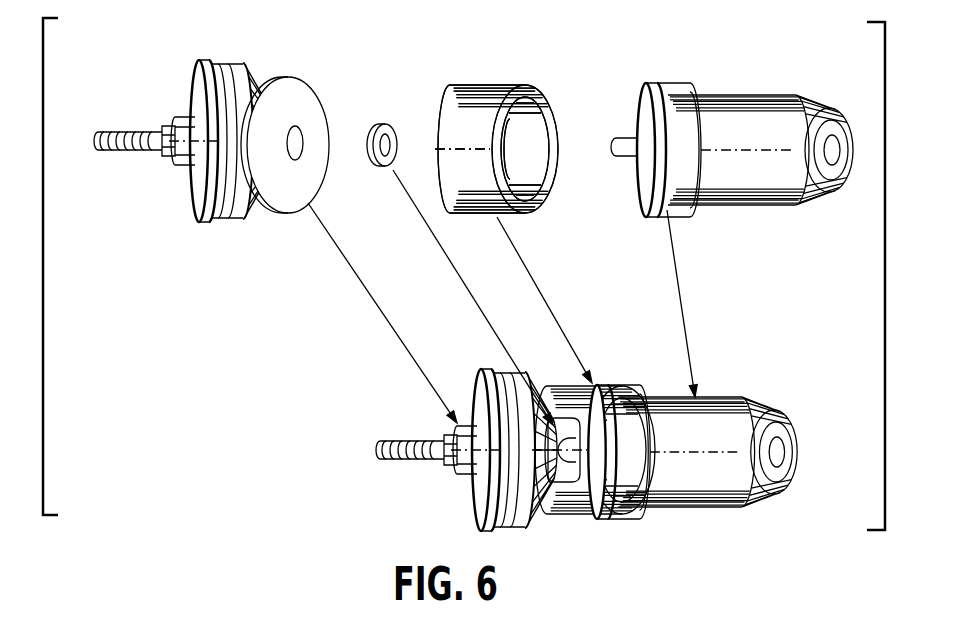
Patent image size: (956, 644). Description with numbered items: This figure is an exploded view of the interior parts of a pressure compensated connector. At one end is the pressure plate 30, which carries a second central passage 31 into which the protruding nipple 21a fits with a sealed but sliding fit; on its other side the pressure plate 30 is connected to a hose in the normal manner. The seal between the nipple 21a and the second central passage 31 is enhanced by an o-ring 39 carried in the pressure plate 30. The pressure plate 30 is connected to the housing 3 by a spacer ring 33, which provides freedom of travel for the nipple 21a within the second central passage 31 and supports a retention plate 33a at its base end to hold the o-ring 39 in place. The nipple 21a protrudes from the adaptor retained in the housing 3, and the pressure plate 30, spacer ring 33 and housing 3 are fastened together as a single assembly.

The pressure plate 30 is at (258, 70).
The second central passage 31 is at (298, 138).
The o-ring 39 is at (392, 123).
The spacer ring 33 is at (500, 82).
The retention plate 33a is at (451, 88).
The nipple 21a is at (623, 137).
The housing 3 is at (743, 95).